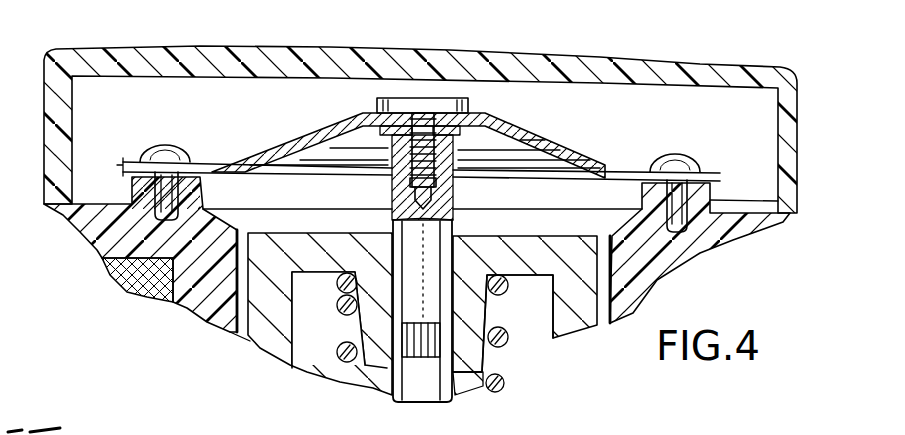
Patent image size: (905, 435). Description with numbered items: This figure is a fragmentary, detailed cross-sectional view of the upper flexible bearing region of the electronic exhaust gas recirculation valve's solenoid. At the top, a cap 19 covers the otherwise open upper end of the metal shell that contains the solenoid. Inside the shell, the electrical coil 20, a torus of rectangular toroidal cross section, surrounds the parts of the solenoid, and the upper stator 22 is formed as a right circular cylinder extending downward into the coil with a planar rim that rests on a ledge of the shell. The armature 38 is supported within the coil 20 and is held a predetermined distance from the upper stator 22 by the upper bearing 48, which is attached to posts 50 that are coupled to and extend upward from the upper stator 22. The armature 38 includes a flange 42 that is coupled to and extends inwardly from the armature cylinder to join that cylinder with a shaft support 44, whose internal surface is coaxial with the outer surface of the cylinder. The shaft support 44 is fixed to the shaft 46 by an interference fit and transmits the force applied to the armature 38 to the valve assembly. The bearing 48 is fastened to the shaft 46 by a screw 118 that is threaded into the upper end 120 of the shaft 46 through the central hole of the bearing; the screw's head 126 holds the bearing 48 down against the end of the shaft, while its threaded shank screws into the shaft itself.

The cap 19 is at (797, 178).
The posts 50 is at (778, 201).
The armature 38 is at (600, 297).
The electrical coil 20 is at (113, 275).
The upper stator 22 is at (157, 280).
The shaft 46 is at (455, 307).
The flange 42 is at (487, 356).
The shaft support 44 is at (528, 277).
The screw 118 is at (462, 150).
The upper bearing 48 is at (577, 150).
The head 126 is at (468, 104).
The upper end 120 is at (400, 128).